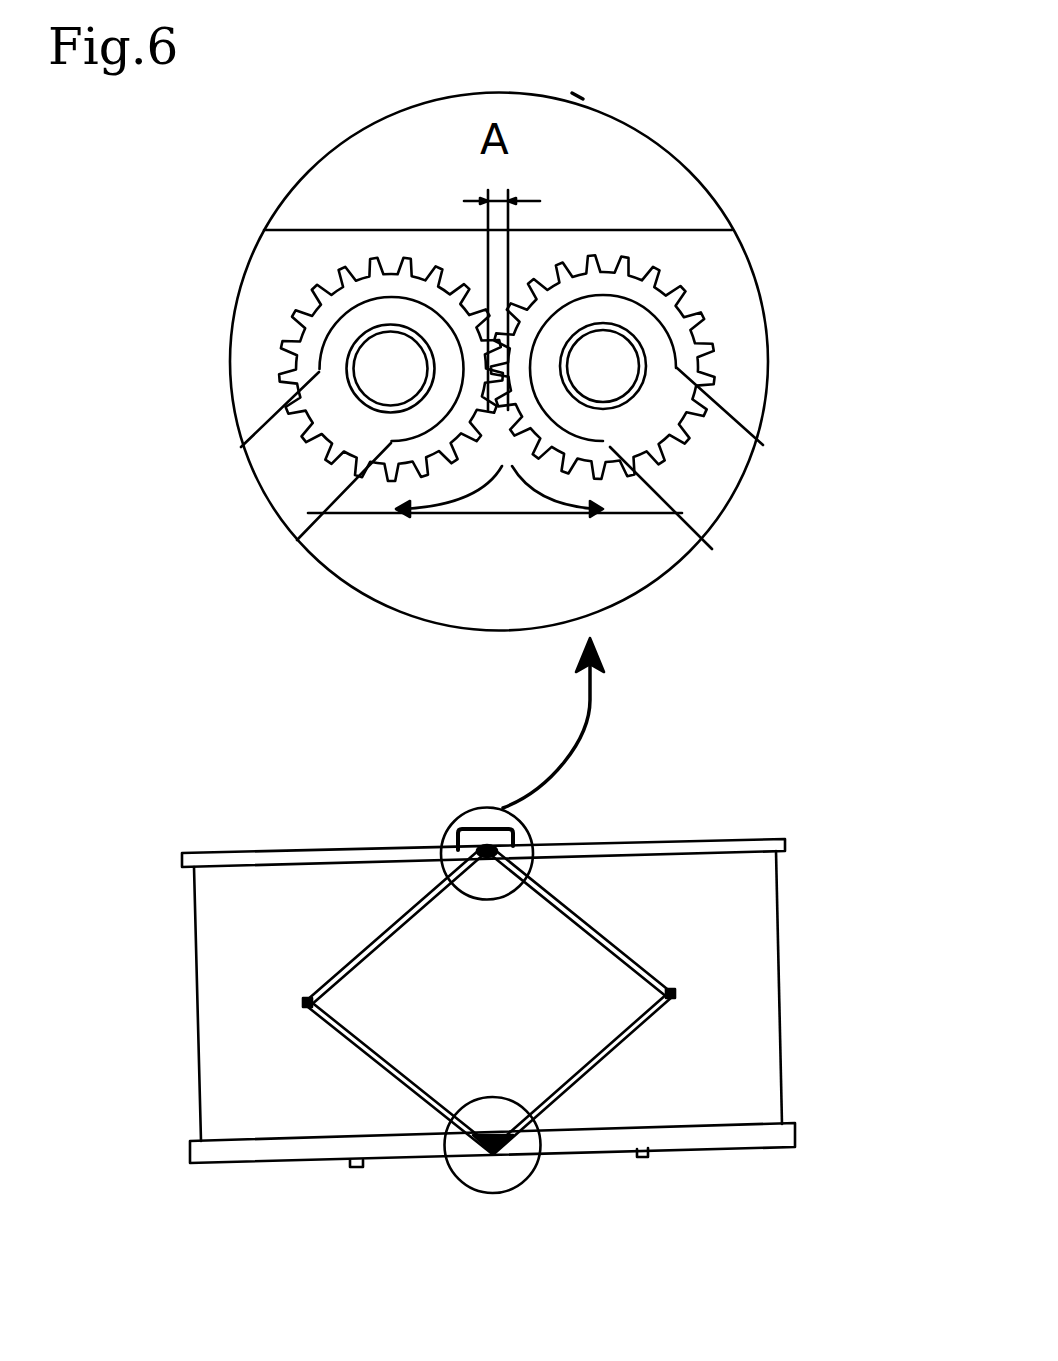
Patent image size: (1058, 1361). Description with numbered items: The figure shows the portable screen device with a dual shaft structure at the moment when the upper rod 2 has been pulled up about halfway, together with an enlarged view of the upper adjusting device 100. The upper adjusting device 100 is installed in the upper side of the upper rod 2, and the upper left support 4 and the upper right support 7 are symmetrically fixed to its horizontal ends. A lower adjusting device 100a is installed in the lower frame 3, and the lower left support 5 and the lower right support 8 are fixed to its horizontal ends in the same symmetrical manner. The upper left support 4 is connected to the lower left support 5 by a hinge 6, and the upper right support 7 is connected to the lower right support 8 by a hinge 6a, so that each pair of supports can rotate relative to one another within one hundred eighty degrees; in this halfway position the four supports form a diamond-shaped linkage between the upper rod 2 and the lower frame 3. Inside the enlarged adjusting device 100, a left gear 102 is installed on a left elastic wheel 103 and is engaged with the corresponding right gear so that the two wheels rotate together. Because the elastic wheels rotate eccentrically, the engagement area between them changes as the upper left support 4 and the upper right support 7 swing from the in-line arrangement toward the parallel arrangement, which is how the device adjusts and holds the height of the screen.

The upper rod 2 is at (509, 487).
The lower frame 3 is at (787, 1137).
The upper left support 4 is at (272, 462).
The lower left support 5 is at (380, 1053).
The hinge 6 is at (320, 1000).
The hinge 6a is at (676, 993).
The upper right support 7 is at (731, 476).
The lower right support 8 is at (590, 1067).
The upper adjusting device 100 is at (520, 821).
The lower adjusting device 100a is at (463, 1167).
The left gear 102 is at (351, 268).
The left elastic wheel 103 is at (434, 268).